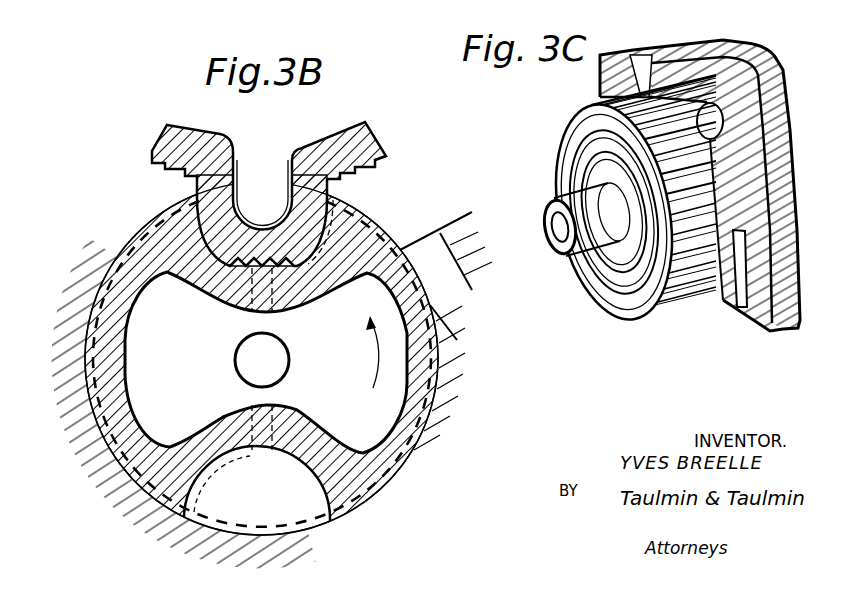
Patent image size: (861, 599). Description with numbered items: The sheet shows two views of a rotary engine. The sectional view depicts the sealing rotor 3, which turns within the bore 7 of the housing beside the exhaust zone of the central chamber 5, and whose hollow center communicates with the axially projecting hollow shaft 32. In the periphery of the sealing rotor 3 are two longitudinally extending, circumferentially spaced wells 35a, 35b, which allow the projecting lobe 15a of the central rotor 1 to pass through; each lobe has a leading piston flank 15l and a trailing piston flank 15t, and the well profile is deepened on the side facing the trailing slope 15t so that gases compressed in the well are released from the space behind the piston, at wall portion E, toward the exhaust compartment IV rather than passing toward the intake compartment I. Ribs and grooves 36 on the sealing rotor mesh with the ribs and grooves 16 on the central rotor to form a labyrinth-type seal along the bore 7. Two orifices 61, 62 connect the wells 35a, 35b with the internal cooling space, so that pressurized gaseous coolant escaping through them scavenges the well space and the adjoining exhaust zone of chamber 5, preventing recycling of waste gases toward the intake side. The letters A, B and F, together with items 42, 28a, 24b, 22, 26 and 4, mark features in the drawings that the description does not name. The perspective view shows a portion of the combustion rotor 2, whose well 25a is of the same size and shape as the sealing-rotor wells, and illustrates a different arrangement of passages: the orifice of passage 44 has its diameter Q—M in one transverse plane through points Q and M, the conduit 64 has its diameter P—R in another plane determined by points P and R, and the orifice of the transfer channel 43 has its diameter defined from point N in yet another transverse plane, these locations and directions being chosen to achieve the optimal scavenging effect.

In FIG. 3B, the central rotor 1 is at (377, 133).
In FIG. 3B, the ribs and grooves 16 is at (389, 167).
In FIG. 3B, the projecting lobe 15a is at (298, 167).
In FIG. 3B, the leading piston flank 15l is at (233, 176).
In FIG. 3B, the trailing piston flank 15t is at (297, 206).
In FIG. 3B, the well 35a is at (318, 222).
In FIG. 3B, the well 35b is at (293, 453).
In FIG. 3B, the housing wall 42 is at (440, 238).
In FIG. 3B, the central chamber 5 is at (86, 236).
In FIG. 3C, the central chamber 5 is at (762, 334).
In FIG. 3B, the sealing rotor 3 is at (440, 342).
In FIG. 3B, the ribs and grooves 36 is at (437, 396).
In FIG. 3B, the orifice 61 is at (263, 316).
In FIG. 3B, the orifice 62 is at (261, 406).
In FIG. 3B, the hollow shaft 32 is at (235, 360).
In FIG. 3B, the bore 7 is at (297, 523).
In FIG. 3C, the conduit 64 is at (644, 78).
In FIG. 3C, the well 25a is at (600, 110).
In FIG. 3C, the intermediate ring 28a is at (710, 140).
In FIG. 3C, the inner ring 24b is at (587, 170).
In FIG. 3C, the shaft hub 22 is at (573, 252).
In FIG. 3C, the combustion rotor 2 is at (652, 317).
In FIG. 3C, the gear teeth 26 is at (687, 292).
In FIG. 3C, the transfer channel 43 is at (741, 310).
In FIG. 3C, the housing block 4 is at (784, 66).
In FIG. 3C, the passage 44 is at (741, 66).
In FIG. 3C, the point R is at (641, 72).
In FIG. 3C, the point P is at (662, 70).
In FIG. 3C, the point Q is at (708, 63).
In FIG. 3C, the point M is at (731, 77).
In FIG. 3C, the point N is at (763, 57).
In FIG. 3B, the intake compartment I is at (118, 182).
In FIG. 3B, the exhaust compartment IV is at (447, 198).
In FIG. 3B, the point A is at (340, 309).
In FIG. 3B, the point B is at (187, 306).
In FIG. 3B, the well wall portion / space E is at (365, 228).
In FIG. 3B, the point F is at (168, 216).